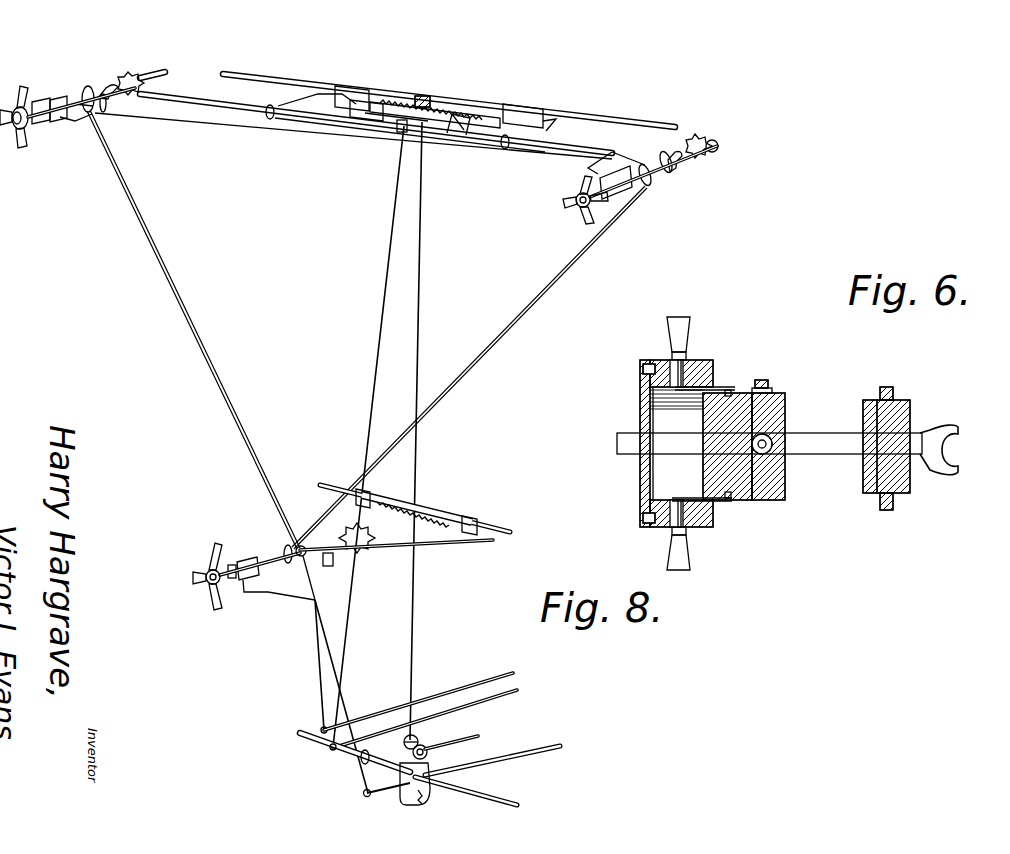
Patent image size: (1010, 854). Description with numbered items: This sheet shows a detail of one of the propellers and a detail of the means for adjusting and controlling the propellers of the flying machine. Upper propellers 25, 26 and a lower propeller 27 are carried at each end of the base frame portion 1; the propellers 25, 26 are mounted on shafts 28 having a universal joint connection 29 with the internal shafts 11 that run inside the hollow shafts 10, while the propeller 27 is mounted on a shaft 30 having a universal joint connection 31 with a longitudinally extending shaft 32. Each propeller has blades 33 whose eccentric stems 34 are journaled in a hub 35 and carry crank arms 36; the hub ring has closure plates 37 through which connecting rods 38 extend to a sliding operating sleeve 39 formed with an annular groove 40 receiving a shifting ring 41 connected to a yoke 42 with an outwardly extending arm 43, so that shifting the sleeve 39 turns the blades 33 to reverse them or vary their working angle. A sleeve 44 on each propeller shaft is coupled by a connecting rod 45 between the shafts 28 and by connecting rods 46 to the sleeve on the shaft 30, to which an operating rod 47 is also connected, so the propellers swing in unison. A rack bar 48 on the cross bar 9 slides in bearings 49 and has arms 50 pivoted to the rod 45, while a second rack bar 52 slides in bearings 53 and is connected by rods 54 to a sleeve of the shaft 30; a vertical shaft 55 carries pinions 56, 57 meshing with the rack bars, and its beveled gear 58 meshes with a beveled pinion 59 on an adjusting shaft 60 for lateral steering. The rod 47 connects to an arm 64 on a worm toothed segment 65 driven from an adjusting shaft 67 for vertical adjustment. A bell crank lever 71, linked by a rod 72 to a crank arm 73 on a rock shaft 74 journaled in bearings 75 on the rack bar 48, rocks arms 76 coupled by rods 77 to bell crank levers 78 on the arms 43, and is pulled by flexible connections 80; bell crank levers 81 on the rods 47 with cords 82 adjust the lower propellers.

In FIG. 8, the base frame portion 1 is at (514, 803).
In FIG. 8, the cross bar 9 is at (641, 121).
In FIG. 8, the hollow shaft 10 is at (703, 143).
In FIG. 8, the internal shaft 11 is at (155, 75).
In FIG. 8, the upper propeller 25 is at (24, 132).
In FIG. 8, the upper propeller 26 is at (577, 210).
In FIG. 8, the lower propeller 27 is at (208, 590).
In FIG. 8, the propeller shaft 28 is at (86, 86).
In FIG. 6, the propeller shaft 28 is at (838, 430).
In FIG. 8, the universal joint connection 29 is at (108, 86).
In FIG. 6, the universal joint connection 29 is at (948, 421).
In FIG. 8, the propeller shaft 30 is at (295, 551).
In FIG. 8, the universal joint connection 31 is at (328, 566).
In FIG. 8, the longitudinally extending shaft 32 is at (370, 538).
In FIG. 8, the blade 33 is at (212, 568).
In FIG. 6, the blade 33 is at (666, 338).
In FIG. 6, the eccentric stem 34 is at (700, 362).
In FIG. 8, the hub 35 is at (12, 95).
In FIG. 6, the hub 35 is at (640, 380).
In FIG. 6, the crank arm 36 is at (680, 398).
In FIG. 8, the closure plate 37 is at (572, 205).
In FIG. 6, the closure plate 37 is at (712, 383).
In FIG. 8, the connecting rod 38 is at (42, 100).
In FIG. 6, the connecting rod 38 is at (758, 366).
In FIG. 8, the sliding operating sleeve 39 is at (60, 124).
In FIG. 6, the sliding operating sleeve 39 is at (760, 500).
In FIG. 6, the annular groove 40 is at (782, 492).
In FIG. 6, the shifting ring 41 is at (775, 400).
In FIG. 8, the yoke 42 is at (46, 98).
In FIG. 6, the yoke 42 is at (770, 378).
In FIG. 8, the arm 43 is at (77, 121).
In FIG. 8, the sleeve 44 is at (110, 112).
In FIG. 6, the sleeve 44 is at (862, 490).
In FIG. 8, the connecting rod 45 is at (215, 106).
In FIG. 8, the connecting rod 46 is at (245, 417).
In FIG. 8, the operating rod 47 is at (323, 655).
In FIG. 8, the rack bar 48 is at (492, 114).
In FIG. 8, the bearing 49 is at (355, 95).
In FIG. 8, the arm 50 is at (270, 119).
In FIG. 8, the rack bar 52 is at (470, 514).
In FIG. 8, the bearing 53 is at (366, 497).
In FIG. 8, the rod 54 is at (318, 489).
In FIG. 8, the vertical shaft 55 is at (425, 610).
In FIG. 8, the pinion 56 is at (430, 508).
In FIG. 8, the pinion 57 is at (438, 104).
In FIG. 8, the beveled gear 58 is at (419, 739).
In FIG. 8, the beveled pinion 59 is at (428, 755).
In FIG. 8, the adjusting shaft 60 is at (470, 740).
In FIG. 8, the arm 64 is at (370, 798).
In FIG. 8, the worm toothed segment 65 is at (420, 800).
In FIG. 8, the adjusting shaft 67 is at (492, 750).
In FIG. 8, the bell crank lever 71 is at (332, 754).
In FIG. 8, the rod 72 is at (367, 610).
In FIG. 8, the crank arm 73 is at (398, 132).
In FIG. 8, the rock shaft 74 is at (366, 121).
In FIG. 8, the bearing 75 is at (418, 96).
In FIG. 8, the arm 76 is at (328, 122).
In FIG. 8, the rod 77 is at (458, 137).
In FIG. 8, the bell crank lever 78 is at (147, 113).
In FIG. 8, the flexible connection 80 is at (460, 704).
In FIG. 8, the bell crank lever 81 is at (318, 692).
In FIG. 8, the cord 82 is at (492, 697).